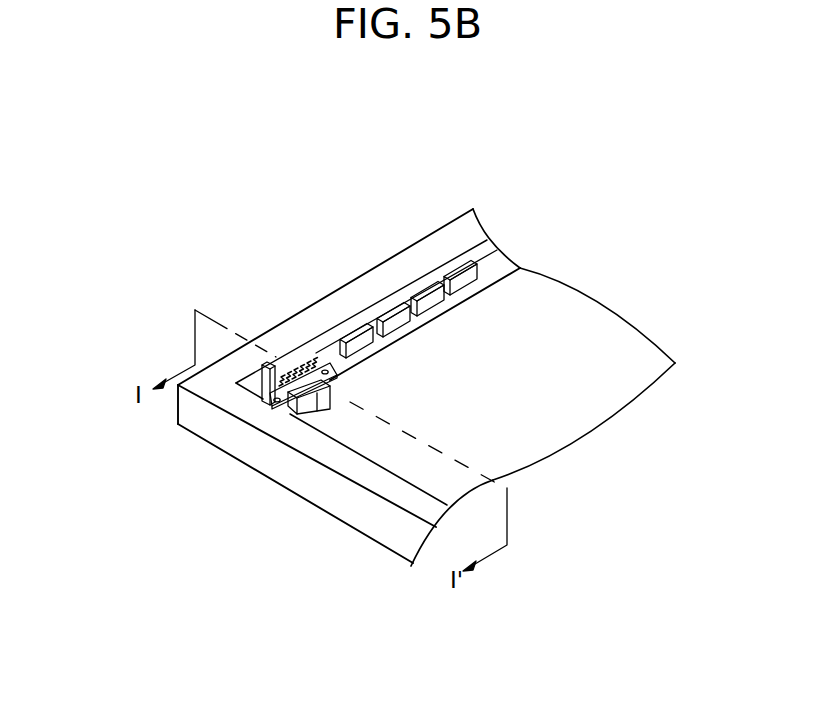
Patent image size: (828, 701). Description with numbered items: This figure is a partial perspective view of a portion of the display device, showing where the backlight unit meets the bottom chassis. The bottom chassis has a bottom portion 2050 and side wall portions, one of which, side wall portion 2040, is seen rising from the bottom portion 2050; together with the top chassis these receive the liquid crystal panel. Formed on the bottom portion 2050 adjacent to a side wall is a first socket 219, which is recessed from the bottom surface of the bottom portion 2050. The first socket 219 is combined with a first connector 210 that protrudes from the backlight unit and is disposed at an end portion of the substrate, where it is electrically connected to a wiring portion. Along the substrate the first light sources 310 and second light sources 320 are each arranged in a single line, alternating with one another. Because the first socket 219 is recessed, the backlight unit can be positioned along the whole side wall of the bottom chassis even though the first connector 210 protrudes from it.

The first connector 210 is at (256, 402).
The first socket 219 is at (331, 398).
The first light sources 310 is at (357, 335).
The second light sources 320 is at (389, 316).
The side wall portion 2040 is at (295, 439).
The bottom portion 2050 is at (413, 463).